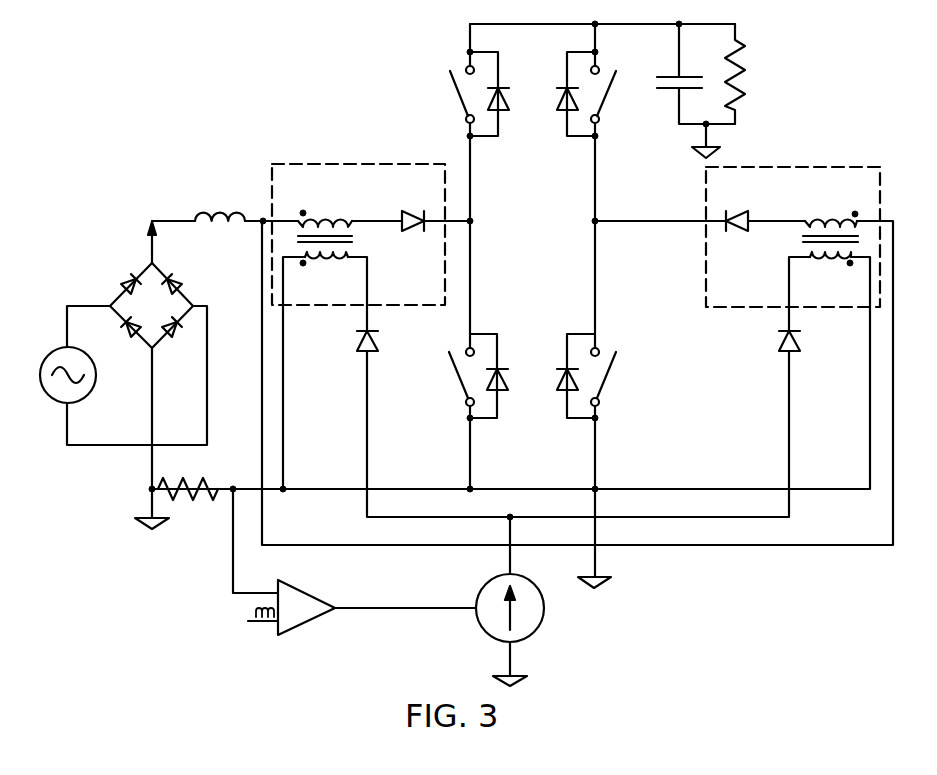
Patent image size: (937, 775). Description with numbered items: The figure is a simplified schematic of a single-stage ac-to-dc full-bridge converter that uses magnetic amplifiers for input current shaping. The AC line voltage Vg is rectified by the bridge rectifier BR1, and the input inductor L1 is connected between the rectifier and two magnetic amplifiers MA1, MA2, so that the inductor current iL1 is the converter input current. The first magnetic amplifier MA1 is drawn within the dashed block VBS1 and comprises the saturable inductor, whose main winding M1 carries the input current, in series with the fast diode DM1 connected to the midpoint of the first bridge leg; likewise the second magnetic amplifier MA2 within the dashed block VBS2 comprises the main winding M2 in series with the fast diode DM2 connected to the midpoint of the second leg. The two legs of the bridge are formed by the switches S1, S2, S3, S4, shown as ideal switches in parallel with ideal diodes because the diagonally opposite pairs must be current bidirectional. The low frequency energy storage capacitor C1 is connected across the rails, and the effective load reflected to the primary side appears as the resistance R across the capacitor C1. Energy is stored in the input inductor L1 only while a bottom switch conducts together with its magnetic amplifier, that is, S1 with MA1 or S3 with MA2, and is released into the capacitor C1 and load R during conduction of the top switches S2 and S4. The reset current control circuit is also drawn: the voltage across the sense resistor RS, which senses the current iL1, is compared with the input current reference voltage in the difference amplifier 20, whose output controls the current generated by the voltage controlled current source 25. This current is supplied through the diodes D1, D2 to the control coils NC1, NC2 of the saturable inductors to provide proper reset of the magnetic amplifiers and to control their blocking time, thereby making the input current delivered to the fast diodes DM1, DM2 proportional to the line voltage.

The comparator (difference amplifier) 20 is at (303, 630).
The voltage controlled current source 25 is at (483, 636).
The switch S1 is at (462, 376).
The switch S2 is at (460, 80).
The switch S3 is at (598, 376).
The switch S4 is at (598, 80).
The energy storage capacitor C1 is at (686, 91).
The resistance R is at (745, 74).
The input inductor L1 is at (220, 203).
The bridge rectifier BR1 is at (132, 305).
The AC line voltage source Vg is at (59, 360).
The magnetic amplifier block VBS1 is at (358, 222).
The magnetic amplifier block VBS2 is at (793, 224).
The saturable inductor main winding M1 is at (333, 206).
The control coil NC1 is at (322, 274).
The magnetic amplifier MA1 is at (411, 282).
The fast diode DM1 is at (416, 207).
The diode D1 is at (385, 345).
The saturable inductor main winding M2 is at (819, 207).
The control coil NC2 is at (830, 275).
The magnetic amplifier MA2 is at (743, 284).
The fast diode DM2 is at (731, 208).
The diode D2 is at (805, 346).
The sense resistor RS is at (185, 508).
The input inductor current iL1 is at (121, 238).